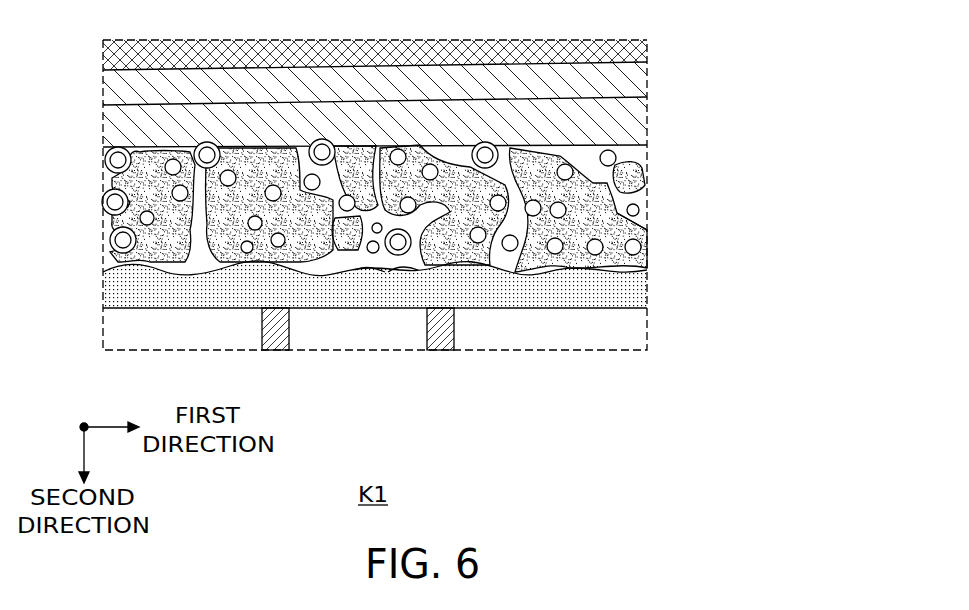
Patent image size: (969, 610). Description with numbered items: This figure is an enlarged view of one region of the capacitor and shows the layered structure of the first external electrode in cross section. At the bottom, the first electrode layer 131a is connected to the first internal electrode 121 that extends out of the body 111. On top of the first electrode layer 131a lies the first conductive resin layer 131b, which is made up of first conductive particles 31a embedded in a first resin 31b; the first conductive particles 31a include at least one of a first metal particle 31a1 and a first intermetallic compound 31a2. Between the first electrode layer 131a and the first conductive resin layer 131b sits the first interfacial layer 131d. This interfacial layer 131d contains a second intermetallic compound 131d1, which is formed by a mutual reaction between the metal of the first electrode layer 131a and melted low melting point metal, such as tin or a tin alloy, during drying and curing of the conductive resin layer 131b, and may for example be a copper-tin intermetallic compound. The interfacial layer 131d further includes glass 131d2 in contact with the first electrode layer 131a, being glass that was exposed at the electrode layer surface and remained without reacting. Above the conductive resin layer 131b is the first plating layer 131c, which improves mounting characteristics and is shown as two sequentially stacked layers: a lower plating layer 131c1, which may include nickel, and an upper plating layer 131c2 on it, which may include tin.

The substrate 111 is at (535, 337).
The first internal electrode 121 is at (442, 340).
The first electrode layer 131a is at (630, 295).
The first conductive resin layer 131b is at (491, 205).
The first plating layer 131c is at (757, 77).
The 1-1-th plating layer 131c1 is at (633, 133).
The 1-2-th plating layer 131c2 is at (633, 88).
The first interfacial layer 131d is at (358, 359).
The second intermetallic compound 131d1 is at (397, 270).
The glass 131d2 is at (378, 270).
The first conductive particles 31a is at (451, 205).
The first metal particle 31a1 is at (640, 166).
The first intermetallic compound 31a2 is at (640, 207).
The first resin 31b is at (637, 223).